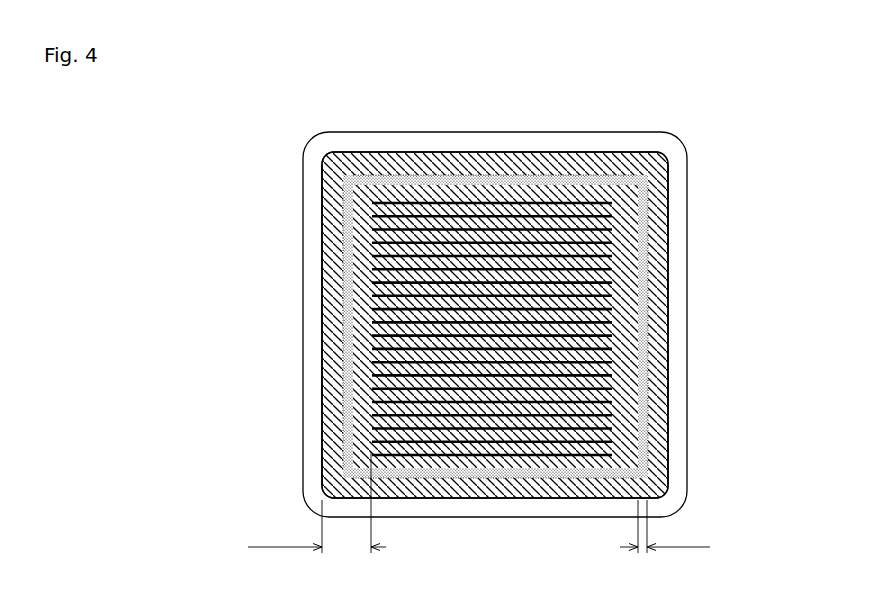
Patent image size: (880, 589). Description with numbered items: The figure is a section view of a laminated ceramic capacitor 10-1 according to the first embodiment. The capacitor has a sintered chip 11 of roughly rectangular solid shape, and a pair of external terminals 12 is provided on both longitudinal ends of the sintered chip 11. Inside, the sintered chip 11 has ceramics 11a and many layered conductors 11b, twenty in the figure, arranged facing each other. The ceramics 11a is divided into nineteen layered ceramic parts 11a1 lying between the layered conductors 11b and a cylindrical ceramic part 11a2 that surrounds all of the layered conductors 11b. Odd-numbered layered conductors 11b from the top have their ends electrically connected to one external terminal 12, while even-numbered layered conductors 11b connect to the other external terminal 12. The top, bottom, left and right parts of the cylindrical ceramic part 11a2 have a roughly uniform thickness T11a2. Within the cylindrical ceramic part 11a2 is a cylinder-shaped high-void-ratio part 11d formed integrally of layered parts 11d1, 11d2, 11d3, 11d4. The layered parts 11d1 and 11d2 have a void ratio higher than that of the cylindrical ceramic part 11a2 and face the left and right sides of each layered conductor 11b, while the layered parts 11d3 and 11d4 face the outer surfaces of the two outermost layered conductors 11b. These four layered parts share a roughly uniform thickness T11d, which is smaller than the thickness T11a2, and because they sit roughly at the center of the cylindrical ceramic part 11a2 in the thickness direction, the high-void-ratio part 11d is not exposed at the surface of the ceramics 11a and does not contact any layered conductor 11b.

The laminated ceramic capacitor 10-1 is at (323, 131).
The sintered chip 11 is at (432, 158).
The external terminals 12 is at (521, 136).
The ceramics 11a is at (323, 160).
The layered ceramic parts 11a1 is at (668, 193).
The cylindrical ceramic part 11a2 is at (669, 238).
The layered conductors 11b is at (355, 213).
The high-void-ratio part 11d is at (490, 332).
The layered part 11d1 is at (350, 318).
The layered part 11d2 is at (646, 322).
The layered part 11d3 is at (578, 178).
The layered part 11d4 is at (540, 480).
The thickness of cylindrical ceramic part T11a2 is at (317, 514).
The thickness of layered parts T11d is at (665, 538).